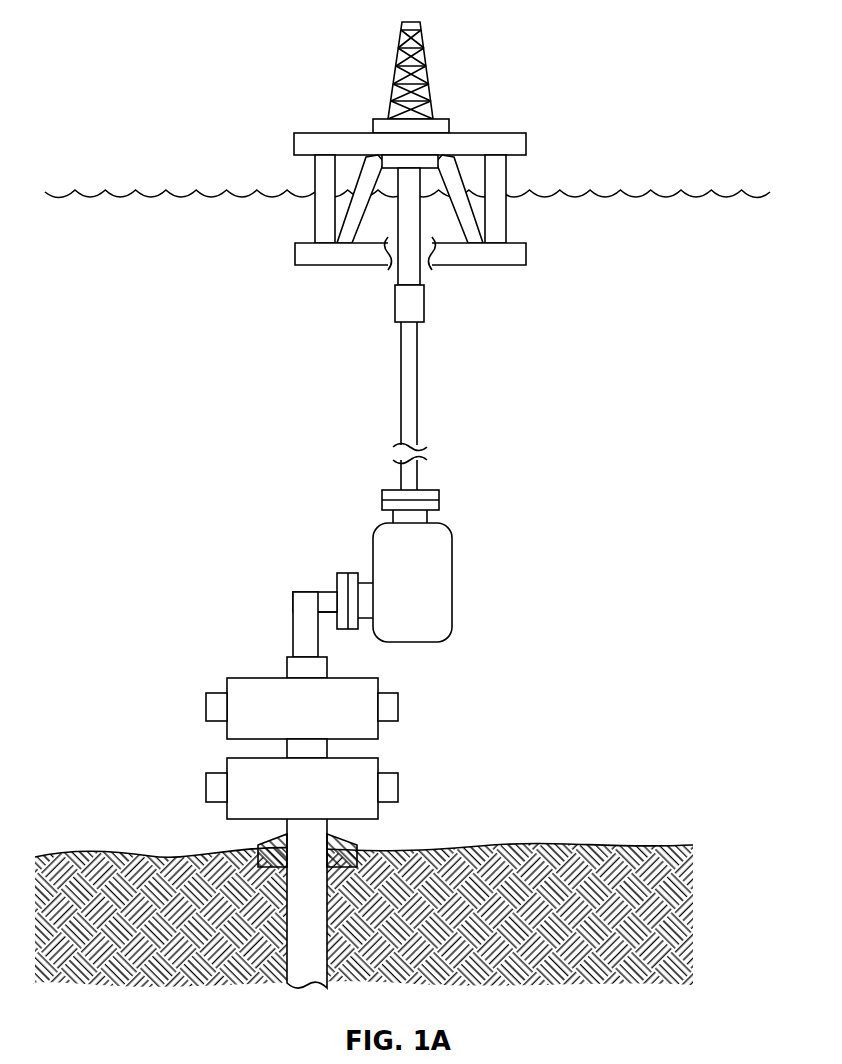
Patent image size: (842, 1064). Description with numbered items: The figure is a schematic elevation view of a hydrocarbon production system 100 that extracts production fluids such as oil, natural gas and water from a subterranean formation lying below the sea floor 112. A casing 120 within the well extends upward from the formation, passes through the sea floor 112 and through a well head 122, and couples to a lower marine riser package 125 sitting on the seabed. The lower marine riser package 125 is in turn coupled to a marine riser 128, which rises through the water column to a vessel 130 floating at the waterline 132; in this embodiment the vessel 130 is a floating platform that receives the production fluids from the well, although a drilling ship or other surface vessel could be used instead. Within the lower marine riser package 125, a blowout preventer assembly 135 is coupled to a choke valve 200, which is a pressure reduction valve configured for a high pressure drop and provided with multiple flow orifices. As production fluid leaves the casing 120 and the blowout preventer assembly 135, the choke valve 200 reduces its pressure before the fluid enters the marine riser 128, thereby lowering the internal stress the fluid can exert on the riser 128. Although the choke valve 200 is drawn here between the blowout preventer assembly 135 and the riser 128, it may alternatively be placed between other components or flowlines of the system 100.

The hydrocarbon production system 100 is at (416, 505).
The sea floor 112 is at (97, 853).
The casing 120 is at (313, 948).
The well head 122 is at (352, 841).
The lower marine riser package 125 is at (369, 570).
The marine riser 128 is at (410, 381).
The vessel 130 is at (518, 146).
The waterline 132 is at (741, 192).
The blowout preventer assembly 135 is at (238, 690).
The choke valve 200 is at (440, 568).